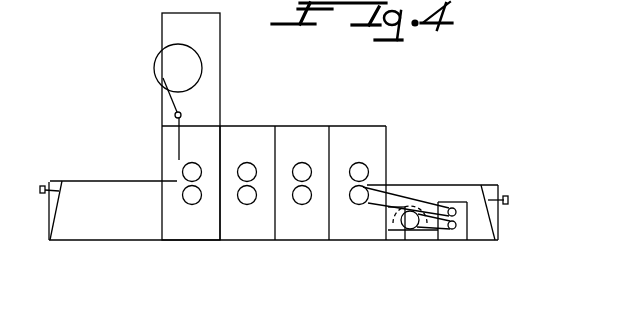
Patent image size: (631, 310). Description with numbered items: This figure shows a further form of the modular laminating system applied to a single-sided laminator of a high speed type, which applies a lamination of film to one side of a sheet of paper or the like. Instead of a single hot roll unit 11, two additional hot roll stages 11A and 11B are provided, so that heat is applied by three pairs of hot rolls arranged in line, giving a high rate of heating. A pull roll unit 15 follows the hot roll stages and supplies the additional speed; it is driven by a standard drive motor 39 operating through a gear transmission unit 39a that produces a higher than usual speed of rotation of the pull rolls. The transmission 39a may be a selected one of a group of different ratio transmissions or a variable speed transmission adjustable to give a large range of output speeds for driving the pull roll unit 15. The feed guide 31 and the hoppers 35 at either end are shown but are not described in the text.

The hot roll unit 11 is at (195, 227).
The hot roll stage 11A is at (250, 226).
The hot roll stage 11B is at (306, 226).
The pull roll unit 15 is at (367, 225).
The upright feed guide with roller 31 is at (203, 102).
The hopper 35 is at (120, 217).
The drive motor 39 is at (410, 234).
The gear transmission unit 39a is at (461, 236).